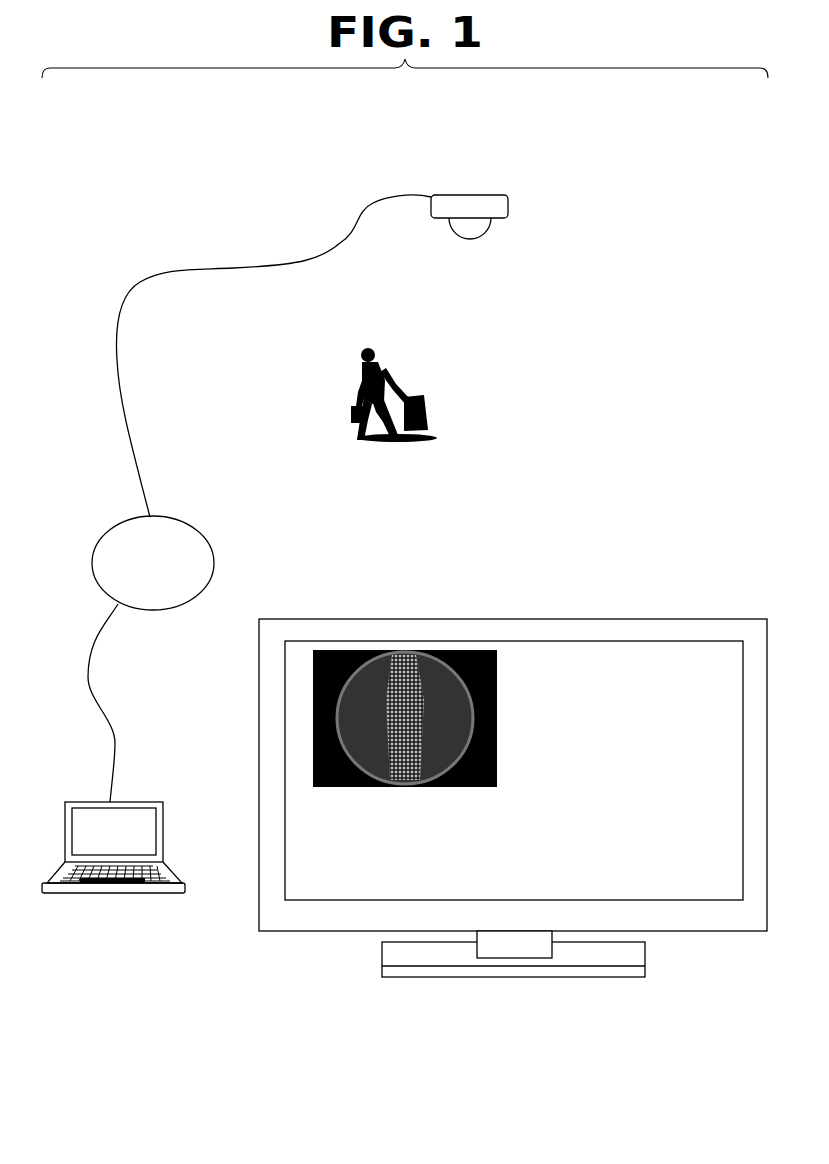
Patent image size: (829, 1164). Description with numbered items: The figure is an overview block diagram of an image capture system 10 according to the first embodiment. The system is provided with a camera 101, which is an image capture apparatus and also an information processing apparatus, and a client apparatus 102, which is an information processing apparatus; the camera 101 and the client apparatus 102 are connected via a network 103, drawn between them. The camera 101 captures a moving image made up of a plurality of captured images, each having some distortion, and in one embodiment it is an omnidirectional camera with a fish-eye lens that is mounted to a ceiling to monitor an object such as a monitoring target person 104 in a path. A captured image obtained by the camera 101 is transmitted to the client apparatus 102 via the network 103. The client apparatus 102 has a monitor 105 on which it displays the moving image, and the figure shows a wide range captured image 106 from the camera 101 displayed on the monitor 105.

The monitoring system 10 is at (636, 146).
The camera 101 is at (485, 195).
The client apparatus 102 is at (145, 802).
The network 103 is at (190, 520).
The monitoring target person 104 is at (382, 362).
The monitor 105 is at (520, 619).
The captured image 106 is at (405, 790).